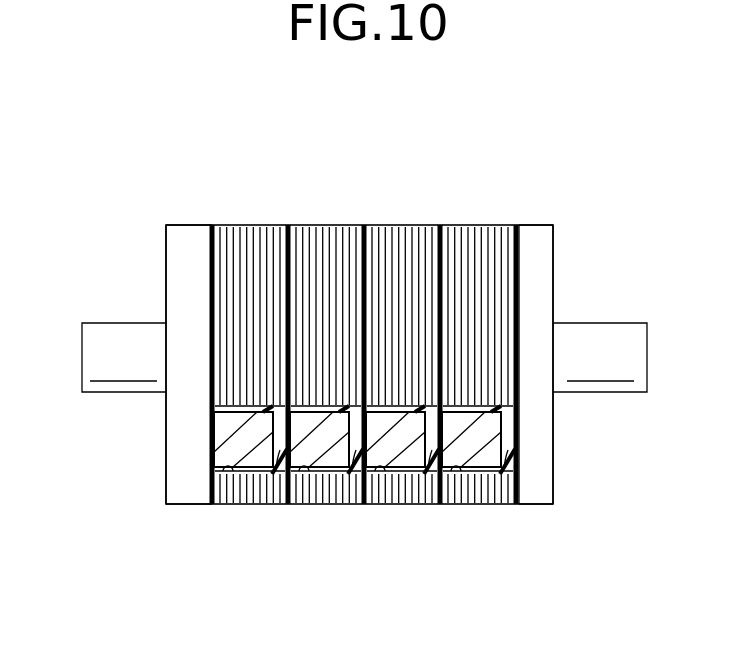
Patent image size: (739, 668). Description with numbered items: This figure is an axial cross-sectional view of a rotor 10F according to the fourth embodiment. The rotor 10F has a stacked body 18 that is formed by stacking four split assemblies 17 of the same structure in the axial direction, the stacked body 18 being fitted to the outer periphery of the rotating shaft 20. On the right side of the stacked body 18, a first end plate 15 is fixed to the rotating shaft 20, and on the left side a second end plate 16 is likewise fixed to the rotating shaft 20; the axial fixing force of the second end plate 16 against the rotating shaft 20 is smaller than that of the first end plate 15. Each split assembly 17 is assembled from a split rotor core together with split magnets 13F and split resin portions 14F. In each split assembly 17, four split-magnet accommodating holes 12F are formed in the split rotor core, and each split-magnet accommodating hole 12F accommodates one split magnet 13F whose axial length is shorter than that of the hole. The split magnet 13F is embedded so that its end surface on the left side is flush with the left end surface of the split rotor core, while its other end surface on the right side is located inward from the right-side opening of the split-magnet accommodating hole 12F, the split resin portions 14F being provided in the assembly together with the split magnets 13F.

The rotor 10F is at (505, 170).
The first end plate 15 is at (533, 226).
The second end plate 16 is at (187, 224).
The split assembly 17 is at (256, 250).
The stacked body 18 is at (478, 128).
The rotating shaft 20 is at (99, 308).
The split-magnet accommodating hole 12F is at (223, 471).
The split magnet 13F is at (245, 443).
The split resin portion 14F is at (275, 467).